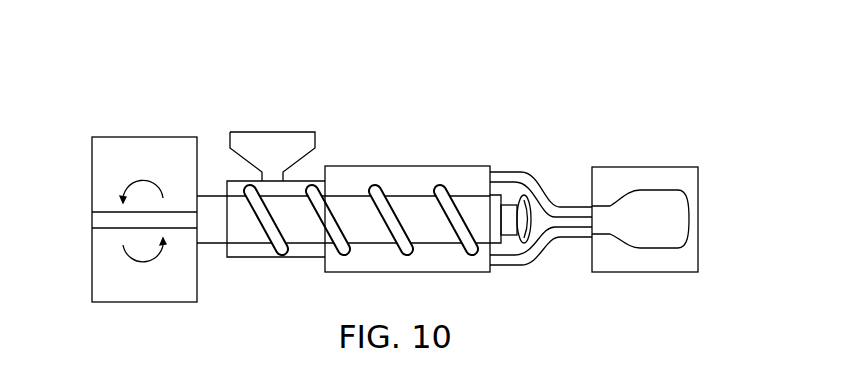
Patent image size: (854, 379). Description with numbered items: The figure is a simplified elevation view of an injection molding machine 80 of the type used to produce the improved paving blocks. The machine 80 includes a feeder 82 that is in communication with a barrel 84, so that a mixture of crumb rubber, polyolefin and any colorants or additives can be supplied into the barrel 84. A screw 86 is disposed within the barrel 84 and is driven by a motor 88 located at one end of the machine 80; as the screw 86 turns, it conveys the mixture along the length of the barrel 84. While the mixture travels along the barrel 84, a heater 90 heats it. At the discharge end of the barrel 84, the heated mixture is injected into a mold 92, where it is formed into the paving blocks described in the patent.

The injection molding machine 80 is at (197, 88).
The feeder 82 is at (287, 131).
The barrel 84 is at (305, 183).
The screw 86 is at (322, 215).
The motor 88 is at (113, 137).
The heater 90 is at (470, 167).
The mold 92 is at (650, 190).